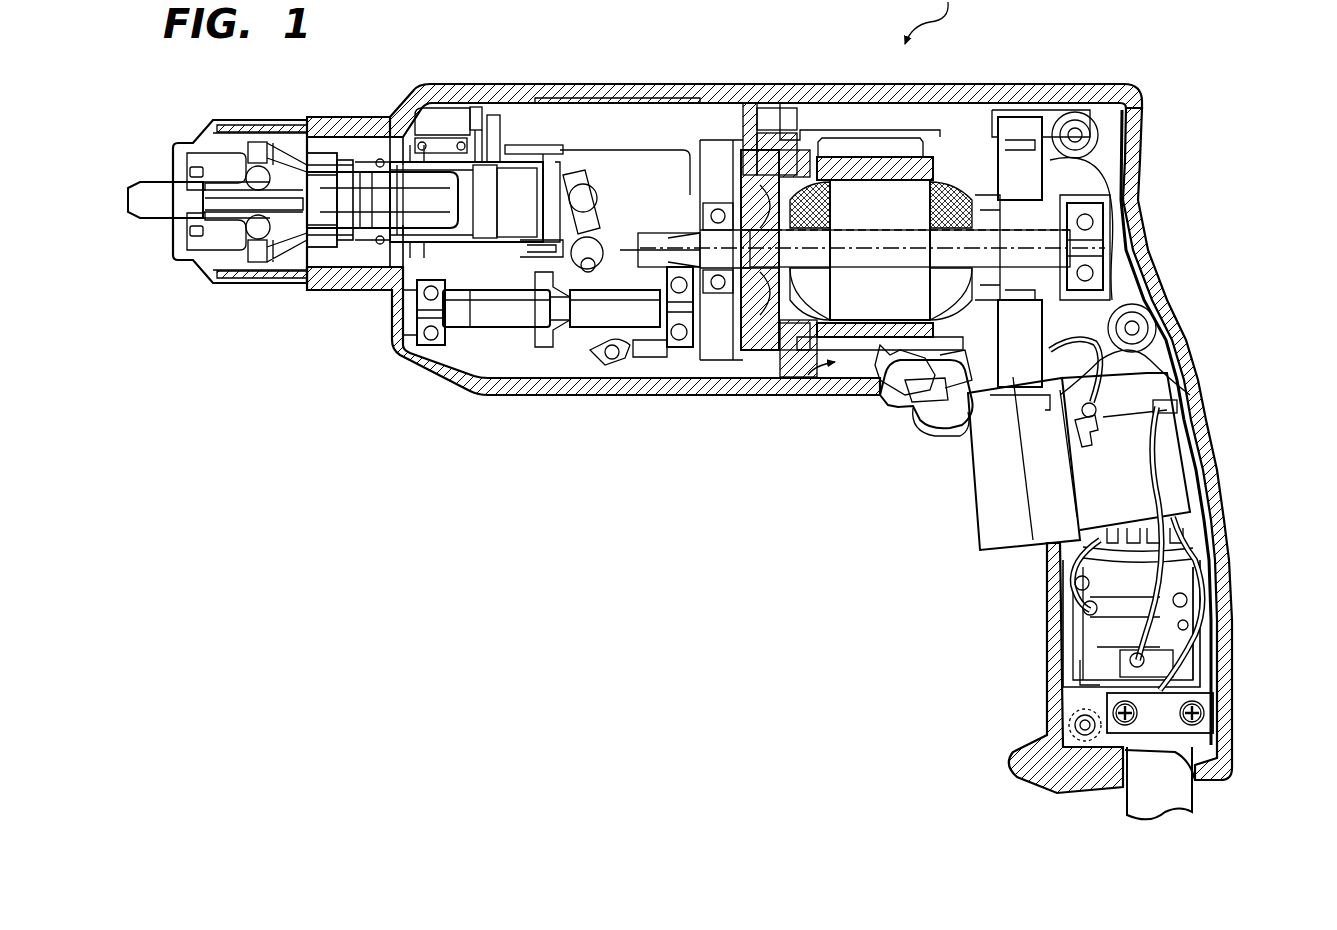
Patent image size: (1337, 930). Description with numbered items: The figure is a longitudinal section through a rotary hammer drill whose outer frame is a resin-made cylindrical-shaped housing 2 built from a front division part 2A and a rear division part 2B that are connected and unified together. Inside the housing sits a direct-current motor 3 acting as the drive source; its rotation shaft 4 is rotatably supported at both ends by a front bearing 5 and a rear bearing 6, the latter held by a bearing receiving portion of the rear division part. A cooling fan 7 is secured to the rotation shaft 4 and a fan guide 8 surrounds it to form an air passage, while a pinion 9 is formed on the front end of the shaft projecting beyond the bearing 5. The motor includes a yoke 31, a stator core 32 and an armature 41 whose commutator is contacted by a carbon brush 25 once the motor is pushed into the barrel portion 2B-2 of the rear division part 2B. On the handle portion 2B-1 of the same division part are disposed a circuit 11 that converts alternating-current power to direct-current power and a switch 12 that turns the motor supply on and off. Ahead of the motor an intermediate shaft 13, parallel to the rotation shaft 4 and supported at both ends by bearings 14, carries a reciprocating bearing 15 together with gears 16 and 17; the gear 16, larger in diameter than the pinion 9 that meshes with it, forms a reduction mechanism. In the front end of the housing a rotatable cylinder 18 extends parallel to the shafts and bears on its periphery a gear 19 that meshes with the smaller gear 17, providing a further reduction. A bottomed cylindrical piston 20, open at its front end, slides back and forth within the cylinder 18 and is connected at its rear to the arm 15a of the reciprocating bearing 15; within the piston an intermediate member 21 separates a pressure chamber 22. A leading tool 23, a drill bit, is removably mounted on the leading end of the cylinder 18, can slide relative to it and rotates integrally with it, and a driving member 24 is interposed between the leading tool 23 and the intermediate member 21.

The cylindrical-shaped housing 2 is at (668, 80).
The front division part 2A is at (440, 84).
The rear division part 2B is at (950, 84).
The handle portion 2B-1 is at (1226, 520).
The barrel portion 2B-2 is at (795, 400).
The direct-current motor 3 is at (810, 372).
The rotation shaft 4 is at (1062, 168).
The bearing 5 is at (717, 210).
The bearing 6 is at (1098, 202).
The cooling fan 7 is at (743, 300).
The fan guide 8 is at (797, 117).
The pinion 9 is at (626, 250).
The circuit (AC/DC converter) 11 is at (1050, 522).
The switch 12 is at (995, 518).
The intermediate shaft 13 is at (520, 315).
The bearings 14 is at (430, 340).
The reciprocating bearing 15 is at (595, 350).
The arm 15a is at (592, 192).
The gear 16 is at (660, 335).
The gear 17 is at (475, 370).
The cylinder 18 is at (337, 162).
The gear 19 is at (478, 110).
The piston 20 is at (550, 173).
The intermediate member 21 is at (460, 220).
The pressure chamber 22 is at (518, 177).
The leading tool 23 is at (163, 210).
The driving member 24 is at (390, 205).
The carbon brush 25 is at (1023, 128).
The yoke 31 is at (857, 160).
The stator core 32 is at (1012, 238).
The armature 41 is at (846, 370).